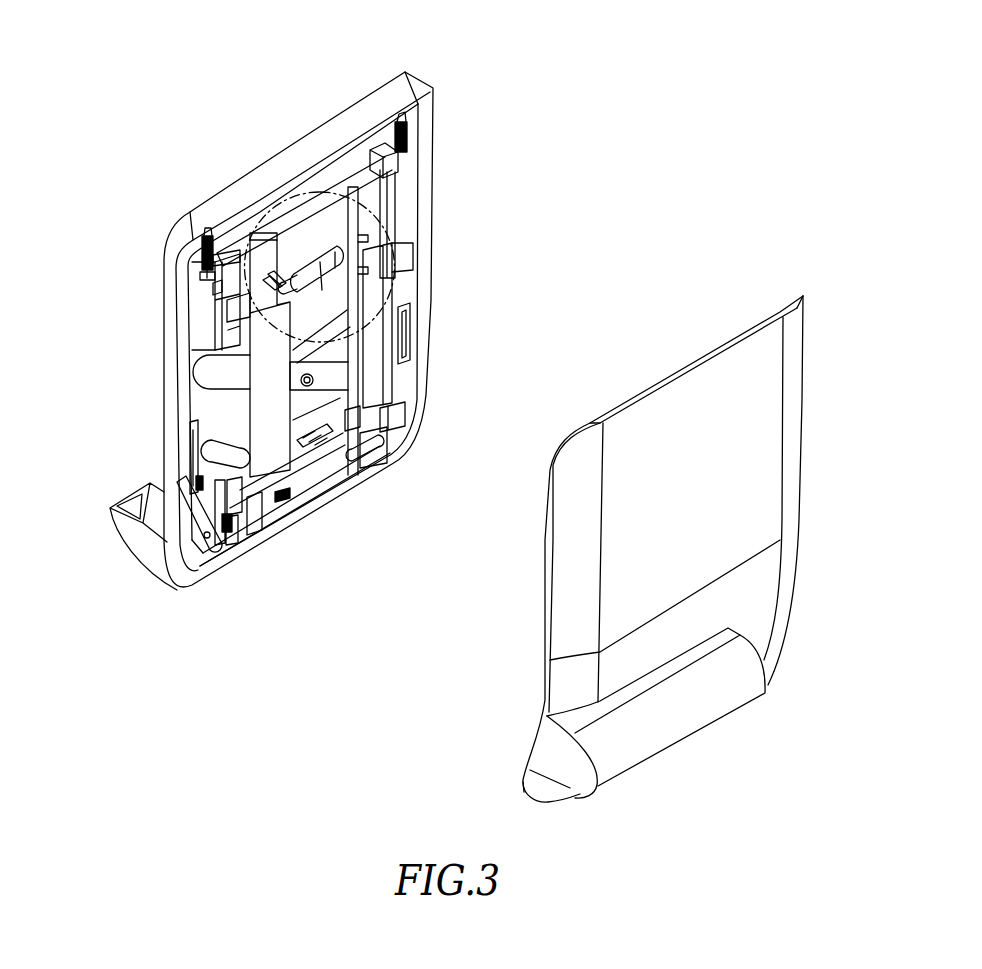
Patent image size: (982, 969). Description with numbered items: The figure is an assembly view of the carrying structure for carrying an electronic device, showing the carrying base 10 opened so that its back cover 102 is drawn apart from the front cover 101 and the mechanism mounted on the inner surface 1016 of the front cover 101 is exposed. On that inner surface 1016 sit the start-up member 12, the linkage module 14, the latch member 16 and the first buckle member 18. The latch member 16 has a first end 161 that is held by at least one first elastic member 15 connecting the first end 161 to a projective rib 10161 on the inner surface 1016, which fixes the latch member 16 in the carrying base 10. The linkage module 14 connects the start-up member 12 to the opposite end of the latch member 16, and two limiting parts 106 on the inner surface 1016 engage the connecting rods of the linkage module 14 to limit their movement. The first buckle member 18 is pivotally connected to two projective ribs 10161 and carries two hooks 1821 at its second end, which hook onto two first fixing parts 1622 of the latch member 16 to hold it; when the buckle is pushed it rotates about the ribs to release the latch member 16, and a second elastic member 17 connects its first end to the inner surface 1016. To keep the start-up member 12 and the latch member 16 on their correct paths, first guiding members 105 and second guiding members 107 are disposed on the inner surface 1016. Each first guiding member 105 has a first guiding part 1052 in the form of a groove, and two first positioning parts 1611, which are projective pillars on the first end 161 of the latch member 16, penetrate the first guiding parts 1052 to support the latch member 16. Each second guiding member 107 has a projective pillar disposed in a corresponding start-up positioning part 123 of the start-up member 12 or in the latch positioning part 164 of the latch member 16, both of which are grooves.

The carrying base 10 is at (445, 262).
The front cover 101 is at (290, 150).
The back cover 102 is at (793, 593).
The first guiding member 105 is at (209, 297).
The first guiding part 1052 is at (213, 287).
The limiting part 106 is at (230, 440).
The second guiding member 107 is at (270, 277).
The inner surface 1016 is at (198, 317).
The projective rib 10161 is at (395, 118).
The start-up member 12 is at (150, 500).
The start-up positioning part 123 is at (190, 457).
The linkage module 14 is at (197, 395).
The first elastic member 15 is at (213, 262).
The latch member 16 is at (373, 195).
The first end of latch member 161 is at (335, 183).
The first positioning part 1611 is at (205, 266).
The first fixing part 1622 is at (380, 413).
The latch positioning part 164 is at (280, 287).
The second elastic member 17 is at (283, 492).
The first buckle member 18 is at (263, 520).
The hook 1821 is at (373, 445).